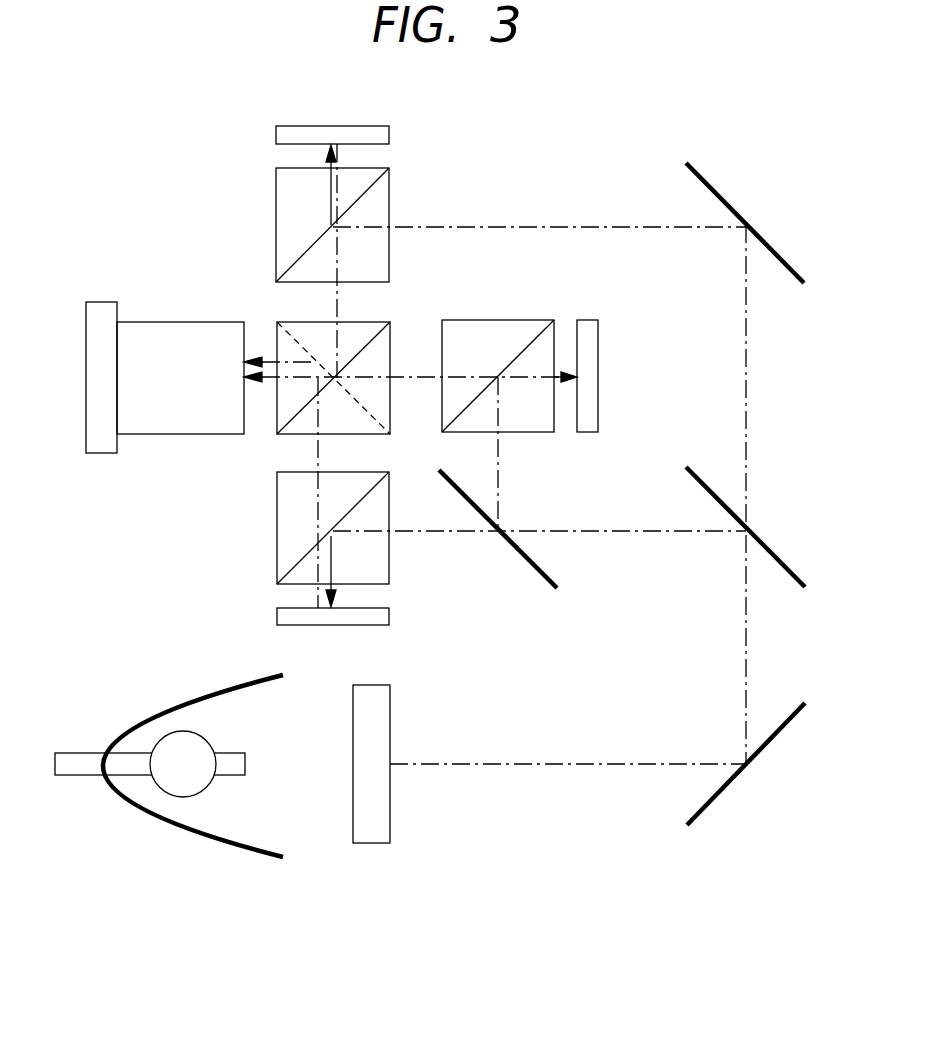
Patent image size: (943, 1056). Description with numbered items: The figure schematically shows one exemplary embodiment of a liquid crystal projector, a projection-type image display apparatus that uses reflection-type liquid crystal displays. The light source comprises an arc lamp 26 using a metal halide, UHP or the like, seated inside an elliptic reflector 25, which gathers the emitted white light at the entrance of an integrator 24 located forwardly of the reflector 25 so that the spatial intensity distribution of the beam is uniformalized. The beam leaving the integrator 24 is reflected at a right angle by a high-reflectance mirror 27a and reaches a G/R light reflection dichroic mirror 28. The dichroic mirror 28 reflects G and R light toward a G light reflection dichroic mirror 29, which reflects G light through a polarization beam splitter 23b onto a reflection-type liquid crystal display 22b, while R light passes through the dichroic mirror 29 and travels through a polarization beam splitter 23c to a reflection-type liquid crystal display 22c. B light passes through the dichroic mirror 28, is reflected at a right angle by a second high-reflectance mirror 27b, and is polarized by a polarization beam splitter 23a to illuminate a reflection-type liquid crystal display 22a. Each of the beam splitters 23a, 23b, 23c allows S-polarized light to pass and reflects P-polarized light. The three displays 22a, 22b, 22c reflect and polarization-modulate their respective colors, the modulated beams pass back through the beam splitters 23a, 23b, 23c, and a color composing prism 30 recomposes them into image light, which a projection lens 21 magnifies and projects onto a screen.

The projection lens 21 is at (190, 322).
The reflection-type liquid crystal display 22a is at (389, 129).
The reflection-type liquid crystal display 22b is at (590, 320).
The reflection-type liquid crystal display 22c is at (277, 612).
The polarization beam splitter 23a is at (389, 187).
The polarization beam splitter 23b is at (522, 320).
The polarization beam splitter 23c is at (277, 535).
The integrator 24 is at (372, 843).
The elliptic reflector 25 is at (148, 700).
The arc lamp 26 is at (205, 737).
The high-reflectance mirror 27a is at (720, 795).
The high-reflectance mirror 27b is at (714, 188).
The G/R light reflection dichroic mirror 28 is at (783, 560).
The G light reflection dichroic mirror 29 is at (519, 553).
The color composing prism 30 is at (292, 440).